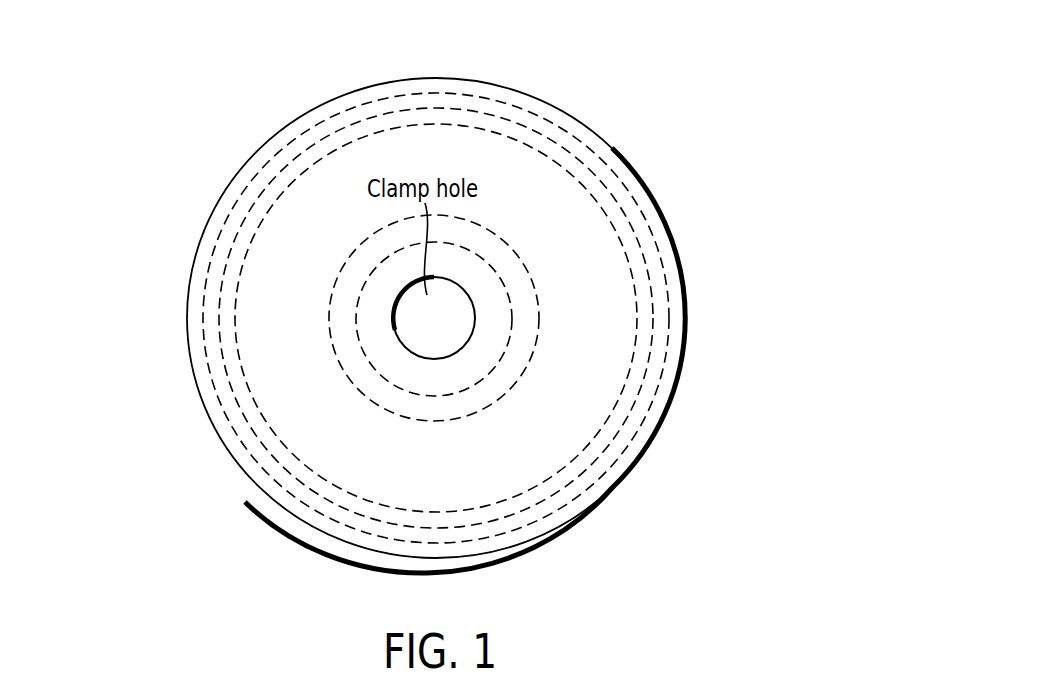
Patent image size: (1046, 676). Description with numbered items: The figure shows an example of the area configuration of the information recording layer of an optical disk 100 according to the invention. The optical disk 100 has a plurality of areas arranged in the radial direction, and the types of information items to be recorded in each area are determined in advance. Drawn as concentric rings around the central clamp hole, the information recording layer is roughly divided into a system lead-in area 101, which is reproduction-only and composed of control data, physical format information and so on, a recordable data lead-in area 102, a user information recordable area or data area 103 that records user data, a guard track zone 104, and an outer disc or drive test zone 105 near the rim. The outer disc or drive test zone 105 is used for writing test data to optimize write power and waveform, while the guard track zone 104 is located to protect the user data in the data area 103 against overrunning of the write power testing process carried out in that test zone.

The optical disk 100 is at (372, 83).
The system lead-in area 101 is at (473, 353).
The data lead-in area 102 is at (363, 373).
The data area 103 is at (540, 212).
The guard track zone 104 is at (628, 262).
The outer disc or drive test zone 105 is at (657, 307).